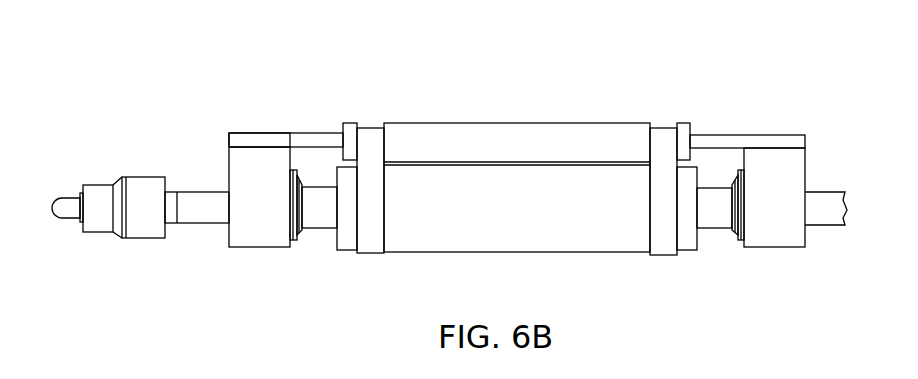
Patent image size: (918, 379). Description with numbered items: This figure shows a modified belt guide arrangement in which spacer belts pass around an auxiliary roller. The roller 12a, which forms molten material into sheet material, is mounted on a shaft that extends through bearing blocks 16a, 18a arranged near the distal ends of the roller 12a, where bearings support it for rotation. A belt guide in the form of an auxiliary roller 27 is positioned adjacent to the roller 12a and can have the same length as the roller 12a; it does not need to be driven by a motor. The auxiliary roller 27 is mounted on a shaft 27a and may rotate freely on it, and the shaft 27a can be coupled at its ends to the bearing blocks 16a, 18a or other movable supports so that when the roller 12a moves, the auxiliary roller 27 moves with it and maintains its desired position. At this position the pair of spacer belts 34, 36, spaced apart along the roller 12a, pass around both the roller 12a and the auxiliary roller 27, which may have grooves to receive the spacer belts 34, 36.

The roller 12a is at (538, 252).
The bearing block 16a is at (250, 160).
The bearing block 18a is at (775, 162).
The auxiliary roller 27 is at (450, 122).
The shaft 27a is at (310, 137).
The spacer belt 34 is at (370, 140).
The spacer belt 36 is at (662, 137).